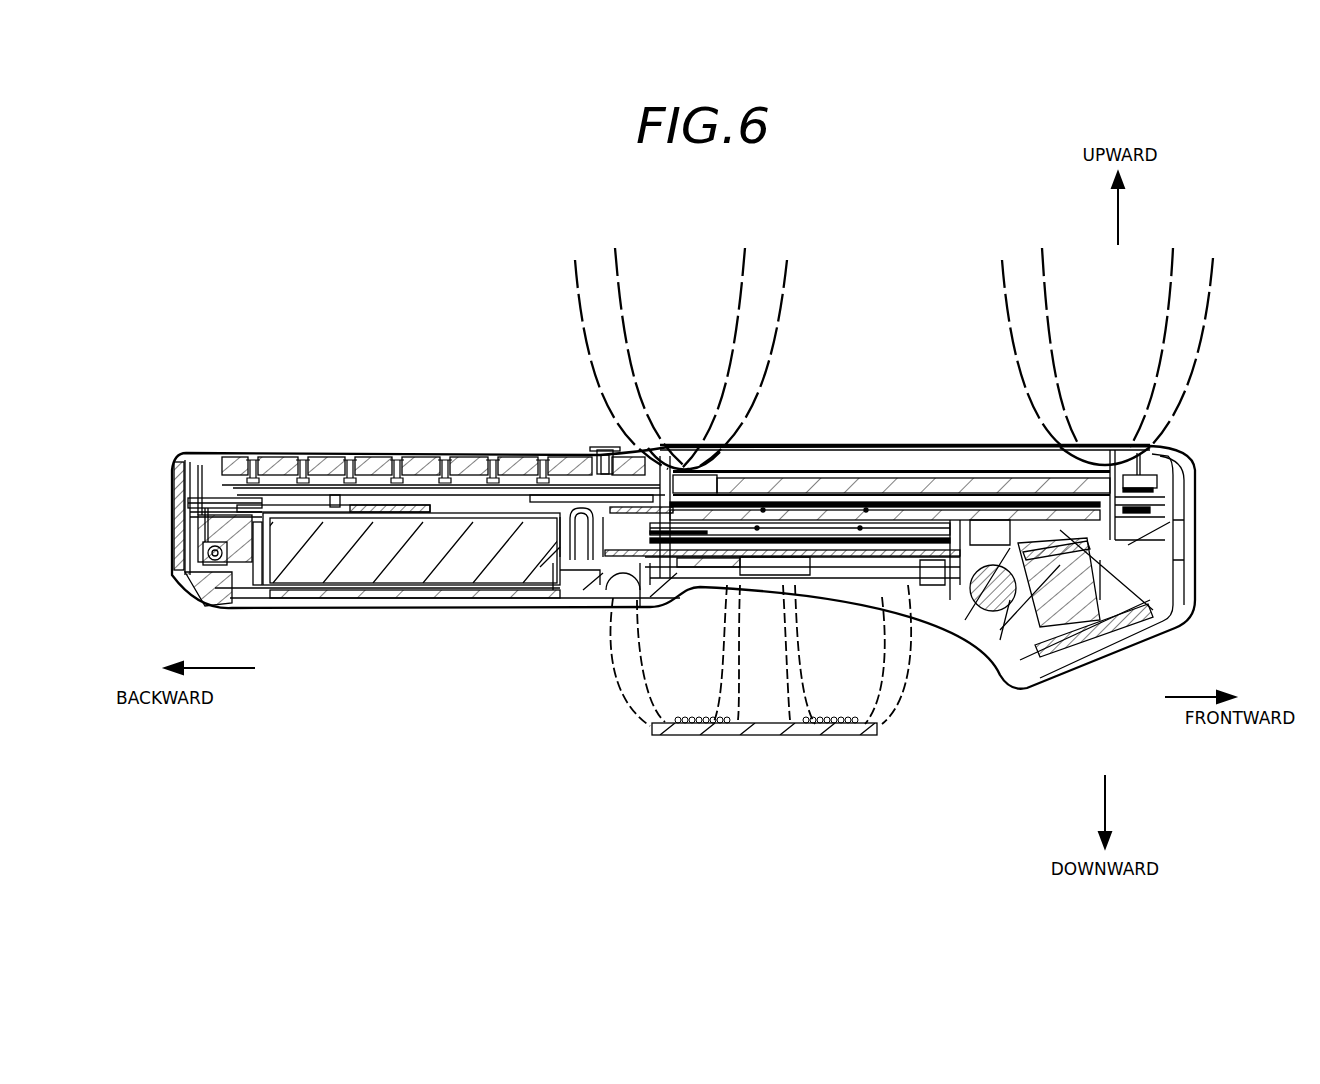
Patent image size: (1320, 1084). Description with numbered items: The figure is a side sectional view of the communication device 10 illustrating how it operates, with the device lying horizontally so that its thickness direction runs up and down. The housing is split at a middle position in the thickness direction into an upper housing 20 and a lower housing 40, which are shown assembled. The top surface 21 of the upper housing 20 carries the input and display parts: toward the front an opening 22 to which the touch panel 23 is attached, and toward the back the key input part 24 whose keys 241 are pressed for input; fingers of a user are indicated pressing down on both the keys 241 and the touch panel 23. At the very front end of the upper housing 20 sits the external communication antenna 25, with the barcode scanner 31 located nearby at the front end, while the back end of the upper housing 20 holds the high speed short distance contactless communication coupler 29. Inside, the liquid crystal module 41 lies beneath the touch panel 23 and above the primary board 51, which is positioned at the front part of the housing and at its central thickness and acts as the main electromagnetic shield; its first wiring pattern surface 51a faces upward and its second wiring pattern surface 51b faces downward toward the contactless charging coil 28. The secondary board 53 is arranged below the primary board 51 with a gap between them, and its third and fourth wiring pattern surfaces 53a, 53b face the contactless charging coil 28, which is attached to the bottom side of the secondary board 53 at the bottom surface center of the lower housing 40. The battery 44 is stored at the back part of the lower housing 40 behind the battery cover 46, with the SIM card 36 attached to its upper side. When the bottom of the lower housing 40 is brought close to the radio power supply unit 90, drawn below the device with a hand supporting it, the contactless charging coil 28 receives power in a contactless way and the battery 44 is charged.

The communication device 10 is at (882, 335).
The upper housing 20 is at (441, 387).
The top surface 21 is at (610, 448).
The opening 22 is at (1020, 447).
The touch panel 23 is at (908, 450).
The key input part 24 is at (434, 442).
The keys 241 is at (370, 450).
The 3G antenna 25 is at (1192, 555).
The contactless charging coil 28 is at (837, 580).
The high speed short distance contactless communication coupler 29 is at (202, 452).
The barcode scanner 31 is at (1073, 637).
The SIM card 36 is at (410, 450).
The lower housing 40 is at (648, 616).
The liquid crystal module 41 is at (827, 450).
The battery 44 is at (400, 565).
The battery cover 46 is at (325, 606).
The primary board 51 is at (1113, 447).
The first wiring pattern surface 51a is at (863, 450).
The second wiring pattern surface 51b is at (990, 612).
The secondary board 53 is at (797, 580).
The third wiring pattern surface 53a is at (962, 450).
The fourth wiring pattern surface 53b is at (897, 580).
The radio power supply unit 90 is at (769, 757).